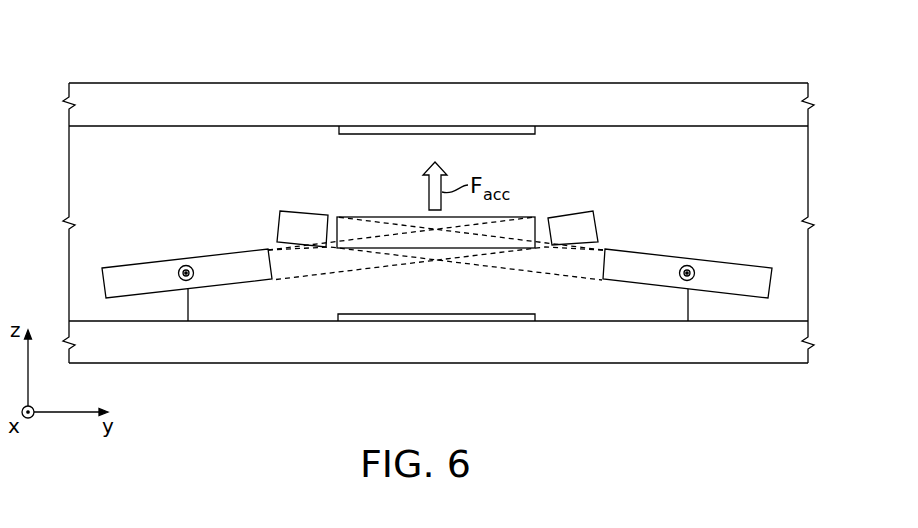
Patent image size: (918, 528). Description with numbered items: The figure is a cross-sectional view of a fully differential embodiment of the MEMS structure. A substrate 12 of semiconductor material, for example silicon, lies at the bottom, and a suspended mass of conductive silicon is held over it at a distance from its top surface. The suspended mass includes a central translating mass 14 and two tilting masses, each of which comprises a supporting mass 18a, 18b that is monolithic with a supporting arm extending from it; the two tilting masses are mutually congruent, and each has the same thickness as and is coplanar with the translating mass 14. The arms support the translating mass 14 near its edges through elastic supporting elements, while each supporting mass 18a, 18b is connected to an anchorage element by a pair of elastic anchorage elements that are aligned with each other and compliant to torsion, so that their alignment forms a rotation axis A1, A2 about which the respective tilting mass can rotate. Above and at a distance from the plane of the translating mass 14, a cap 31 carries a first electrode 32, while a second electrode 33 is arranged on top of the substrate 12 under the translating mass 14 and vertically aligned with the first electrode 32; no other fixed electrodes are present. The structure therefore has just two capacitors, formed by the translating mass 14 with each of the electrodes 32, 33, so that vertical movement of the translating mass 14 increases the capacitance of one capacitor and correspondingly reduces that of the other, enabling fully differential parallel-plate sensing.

The substrate 12 is at (785, 363).
The translating mass 14 is at (407, 216).
The supporting mass 18a is at (128, 272).
The supporting mass 18b is at (735, 271).
The cap 31 is at (700, 113).
The first electrode 32 is at (365, 125).
The second electrode 33 is at (522, 322).
The rotation axis A1 is at (192, 266).
The rotation axis A2 is at (690, 264).